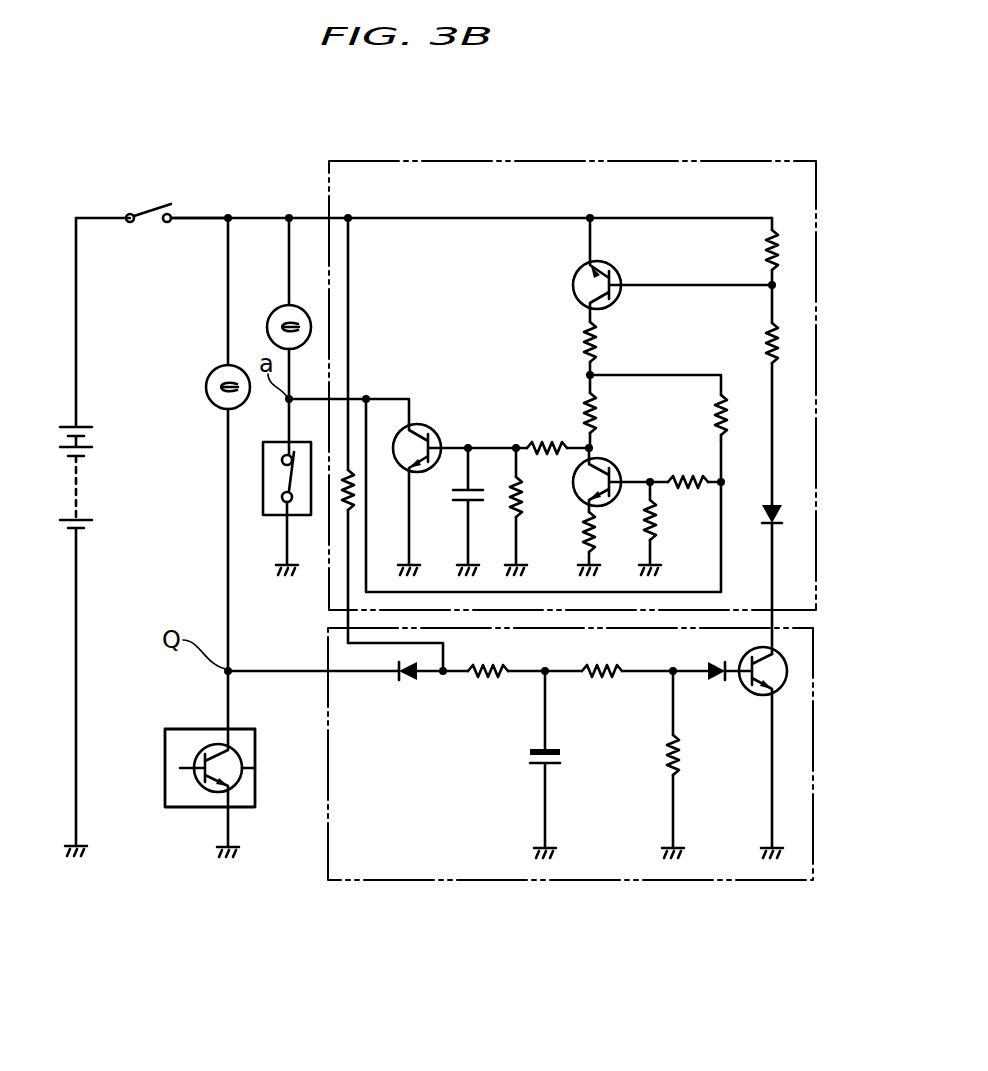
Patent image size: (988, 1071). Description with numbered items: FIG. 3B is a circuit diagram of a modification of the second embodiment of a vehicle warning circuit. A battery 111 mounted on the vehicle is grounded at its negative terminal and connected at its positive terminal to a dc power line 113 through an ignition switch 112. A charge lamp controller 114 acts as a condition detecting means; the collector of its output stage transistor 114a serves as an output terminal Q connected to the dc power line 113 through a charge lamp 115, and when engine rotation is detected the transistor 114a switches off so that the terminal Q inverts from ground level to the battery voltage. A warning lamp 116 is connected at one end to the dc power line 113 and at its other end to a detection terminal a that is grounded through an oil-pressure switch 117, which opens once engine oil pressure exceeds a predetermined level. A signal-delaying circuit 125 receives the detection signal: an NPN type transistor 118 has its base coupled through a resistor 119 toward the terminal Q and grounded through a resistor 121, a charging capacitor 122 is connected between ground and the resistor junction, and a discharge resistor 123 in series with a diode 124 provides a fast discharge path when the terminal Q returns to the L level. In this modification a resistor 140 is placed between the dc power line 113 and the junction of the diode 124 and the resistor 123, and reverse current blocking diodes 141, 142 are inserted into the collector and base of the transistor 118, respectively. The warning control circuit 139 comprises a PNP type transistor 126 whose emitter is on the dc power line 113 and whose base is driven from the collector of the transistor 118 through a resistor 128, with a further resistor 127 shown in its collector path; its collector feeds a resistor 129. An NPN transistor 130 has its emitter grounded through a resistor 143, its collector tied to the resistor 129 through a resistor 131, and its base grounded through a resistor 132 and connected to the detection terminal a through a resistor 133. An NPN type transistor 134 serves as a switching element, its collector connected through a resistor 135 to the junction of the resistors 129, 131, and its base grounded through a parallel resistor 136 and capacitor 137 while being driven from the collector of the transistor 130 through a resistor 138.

The battery 111 is at (76, 485).
The ignition switch 112 is at (143, 205).
The dc power line 113 is at (207, 215).
The charge lamp controller 114 is at (183, 807).
The output stage transistor 114a is at (255, 768).
The charge lamp 115 is at (206, 386).
The warning lamp 116 is at (273, 312).
The oil-pressure switch 117 is at (263, 478).
The NPN type transistor 118 is at (788, 670).
The resistor 119 is at (600, 680).
The resistor 121 is at (680, 762).
The charging capacitor 122 is at (565, 760).
The discharge resistor 123 is at (488, 680).
The diode 124 is at (413, 682).
The signal-delaying circuit 125 is at (517, 880).
The PNP type transistor 126 is at (620, 270).
The resistor 127 is at (780, 248).
The resistor 128 is at (780, 345).
The resistor 129 is at (598, 345).
The NPN transistor 130 is at (614, 466).
The resistor 131 is at (583, 405).
The resistor 132 is at (657, 520).
The resistor 133 is at (688, 478).
The NPN type transistor 134 is at (421, 423).
The resistor 135 is at (730, 405).
The resistor 136 is at (521, 505).
The capacitor 137 is at (462, 497).
The resistor 138 is at (545, 445).
The warning control circuit 139 is at (528, 160).
The resistor 140 is at (340, 492).
The reverse current blocking diode 141 is at (788, 510).
The reverse current blocking diode 142 is at (718, 682).
The resistor 143 is at (594, 535).